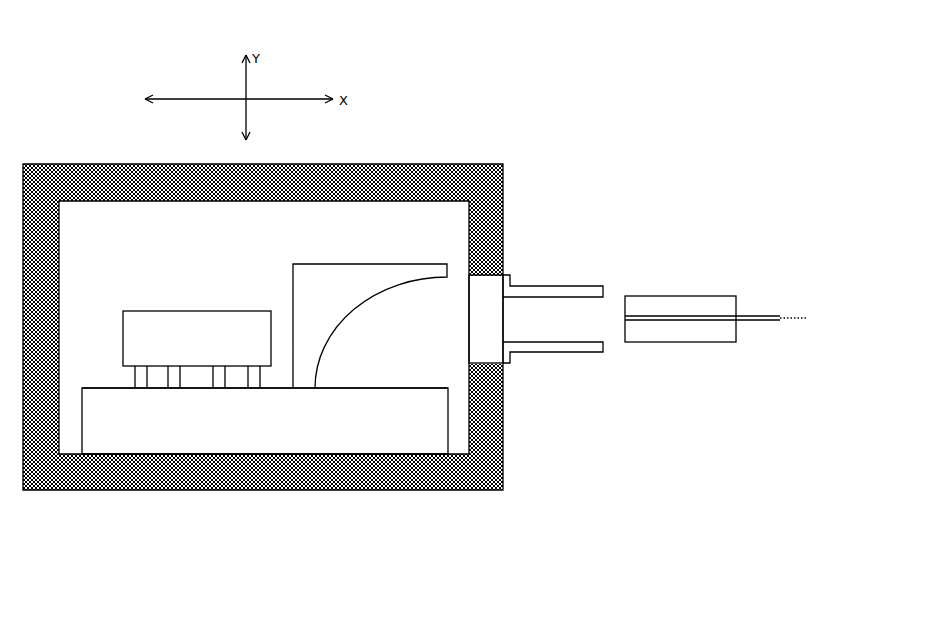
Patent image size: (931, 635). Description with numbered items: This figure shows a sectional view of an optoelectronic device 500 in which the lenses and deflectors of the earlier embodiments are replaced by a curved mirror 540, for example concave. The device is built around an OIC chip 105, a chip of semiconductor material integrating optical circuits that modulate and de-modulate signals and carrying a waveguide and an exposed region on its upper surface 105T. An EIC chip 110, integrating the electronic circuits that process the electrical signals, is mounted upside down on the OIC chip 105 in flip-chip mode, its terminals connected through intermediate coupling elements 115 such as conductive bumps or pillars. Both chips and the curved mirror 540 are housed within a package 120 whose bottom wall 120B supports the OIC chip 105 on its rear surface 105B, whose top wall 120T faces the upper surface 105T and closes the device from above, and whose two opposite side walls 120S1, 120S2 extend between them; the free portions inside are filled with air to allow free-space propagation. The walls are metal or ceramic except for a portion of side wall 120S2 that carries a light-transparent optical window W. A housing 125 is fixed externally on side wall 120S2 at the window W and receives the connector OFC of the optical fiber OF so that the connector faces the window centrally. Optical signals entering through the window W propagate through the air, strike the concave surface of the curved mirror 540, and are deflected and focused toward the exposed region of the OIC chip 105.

The optical sensor system 500 is at (697, 111).
The package 120 is at (307, 308).
The top wall 120T is at (503, 176).
The bottom wall 120B is at (504, 475).
The side wall 120S1 is at (60, 281).
The side wall 120S2 is at (504, 432).
The housing 125 is at (556, 285).
The optical window W is at (492, 327).
The OIC chip 105 is at (265, 421).
The upper surface 105T is at (360, 390).
The rear surface 105B is at (147, 452).
The EIC chip 110 is at (163, 310).
The intermediate coupling elements 115 is at (132, 385).
The curved reflector 540 is at (360, 275).
The connector OFC is at (661, 296).
The optical fiber OF is at (769, 322).